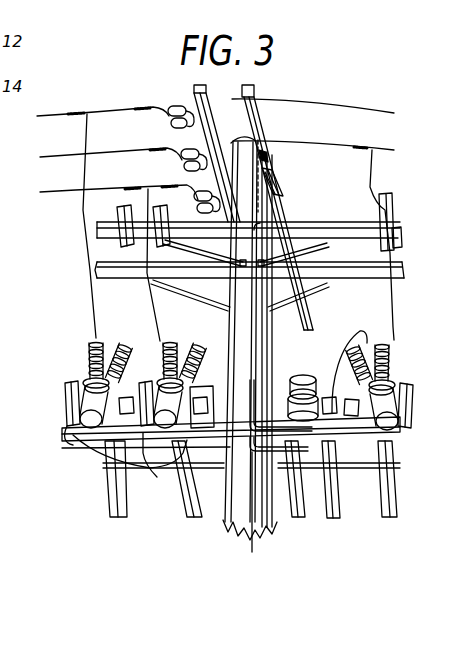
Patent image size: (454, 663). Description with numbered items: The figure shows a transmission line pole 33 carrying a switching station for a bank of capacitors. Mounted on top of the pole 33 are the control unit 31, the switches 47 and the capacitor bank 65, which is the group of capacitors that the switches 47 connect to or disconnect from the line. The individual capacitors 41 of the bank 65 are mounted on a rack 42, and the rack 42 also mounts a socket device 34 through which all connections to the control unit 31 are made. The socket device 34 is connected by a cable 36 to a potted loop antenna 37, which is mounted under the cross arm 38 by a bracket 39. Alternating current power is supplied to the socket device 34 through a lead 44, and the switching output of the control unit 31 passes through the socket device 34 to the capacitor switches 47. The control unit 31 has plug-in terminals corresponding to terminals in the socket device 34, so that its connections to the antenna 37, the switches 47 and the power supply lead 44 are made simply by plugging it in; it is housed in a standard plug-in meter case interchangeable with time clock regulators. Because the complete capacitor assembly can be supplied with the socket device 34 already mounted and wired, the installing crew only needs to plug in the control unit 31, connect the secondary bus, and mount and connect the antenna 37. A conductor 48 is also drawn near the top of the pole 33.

The control unit 31 is at (306, 386).
The transmission line pole 33 is at (268, 352).
The socket device 34 is at (320, 419).
The cable 36 is at (240, 320).
The potted loop antenna 37 is at (267, 182).
The cross arm 38 is at (255, 88).
The bracket 39 is at (262, 157).
The capacitors 41 is at (188, 513).
The rack 42 is at (400, 443).
The lead 44 is at (253, 542).
The switches 47 is at (73, 443).
The conductor wire 48 is at (314, 110).
The capacitor bank 65 is at (391, 527).